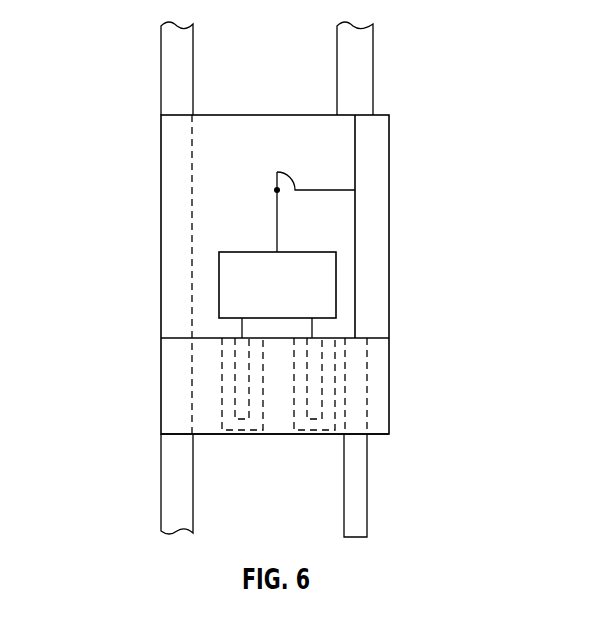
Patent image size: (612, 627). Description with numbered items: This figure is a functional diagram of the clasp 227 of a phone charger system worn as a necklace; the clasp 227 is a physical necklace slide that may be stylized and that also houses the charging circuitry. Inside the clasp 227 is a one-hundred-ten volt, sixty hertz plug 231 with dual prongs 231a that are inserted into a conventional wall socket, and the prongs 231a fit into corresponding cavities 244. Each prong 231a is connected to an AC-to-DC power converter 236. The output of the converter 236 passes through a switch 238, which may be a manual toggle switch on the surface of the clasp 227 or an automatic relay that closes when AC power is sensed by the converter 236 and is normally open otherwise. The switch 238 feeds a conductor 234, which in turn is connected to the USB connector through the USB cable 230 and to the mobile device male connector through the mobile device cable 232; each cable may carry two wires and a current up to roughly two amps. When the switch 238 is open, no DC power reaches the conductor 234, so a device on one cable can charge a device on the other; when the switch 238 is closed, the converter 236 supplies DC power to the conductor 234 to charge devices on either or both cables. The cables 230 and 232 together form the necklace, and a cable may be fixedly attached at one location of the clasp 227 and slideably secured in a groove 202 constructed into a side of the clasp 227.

The clasp 227 is at (145, 167).
The USB cable 230 is at (161, 72).
The groove 202 is at (194, 161).
The plug 231 is at (247, 212).
The switch 238 is at (279, 173).
The conductor 234 is at (355, 240).
The AC-to-DC power converter 236 is at (219, 287).
The prong 231a is at (307, 388).
The cavity 244 is at (222, 410).
The mobile device cable 232 is at (370, 413).